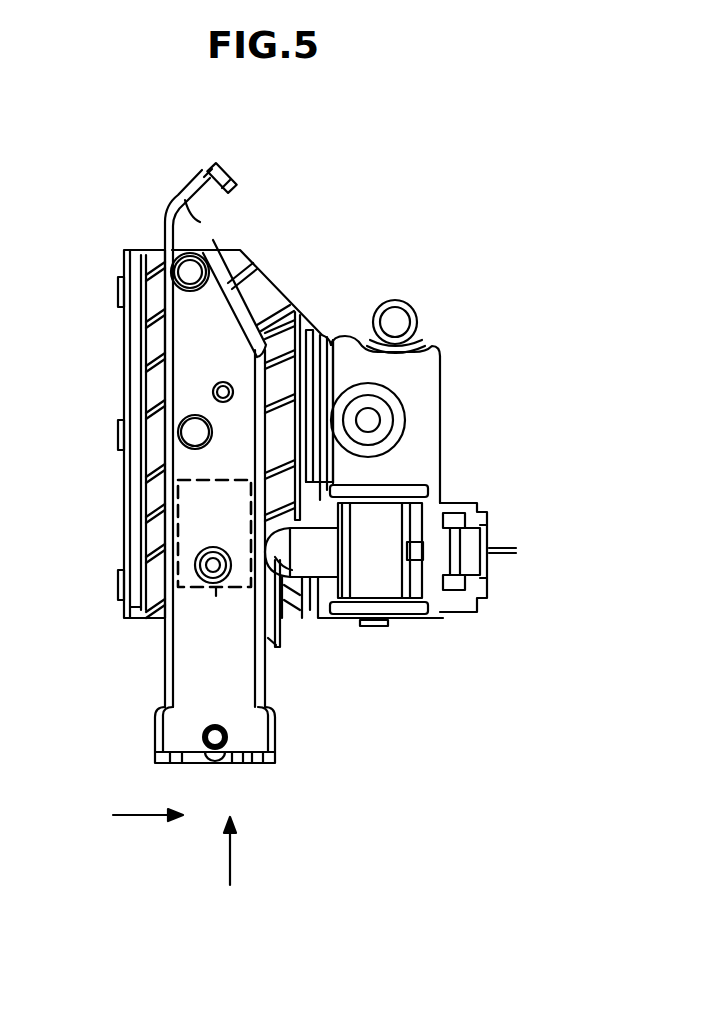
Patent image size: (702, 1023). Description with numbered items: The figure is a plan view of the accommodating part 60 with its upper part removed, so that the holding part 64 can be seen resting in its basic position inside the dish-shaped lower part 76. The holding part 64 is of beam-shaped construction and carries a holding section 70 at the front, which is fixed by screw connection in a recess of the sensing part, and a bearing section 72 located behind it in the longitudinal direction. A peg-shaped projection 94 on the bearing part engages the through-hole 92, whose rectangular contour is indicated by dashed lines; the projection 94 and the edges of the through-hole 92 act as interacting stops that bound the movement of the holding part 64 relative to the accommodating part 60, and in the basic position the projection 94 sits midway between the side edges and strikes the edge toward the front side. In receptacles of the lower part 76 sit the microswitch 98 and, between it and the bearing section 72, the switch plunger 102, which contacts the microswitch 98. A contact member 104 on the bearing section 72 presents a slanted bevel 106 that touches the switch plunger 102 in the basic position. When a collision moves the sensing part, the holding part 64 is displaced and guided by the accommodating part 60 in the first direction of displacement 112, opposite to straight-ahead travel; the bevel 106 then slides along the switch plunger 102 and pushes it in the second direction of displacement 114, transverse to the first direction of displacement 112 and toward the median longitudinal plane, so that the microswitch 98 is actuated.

The accommodating part 60 is at (454, 344).
The holding part 64 is at (192, 380).
The holding section 70 is at (252, 737).
The bearing section 72 is at (196, 465).
The lower part 76 is at (427, 400).
The through-hole 92 is at (213, 600).
The projection 94 is at (205, 556).
The microswitch 98 is at (445, 543).
The switch plunger 102 is at (385, 575).
The contact member 104 is at (272, 640).
The bevel 106 is at (285, 565).
The first direction of displacement 112 is at (232, 858).
The second direction of displacement 114 is at (133, 817).